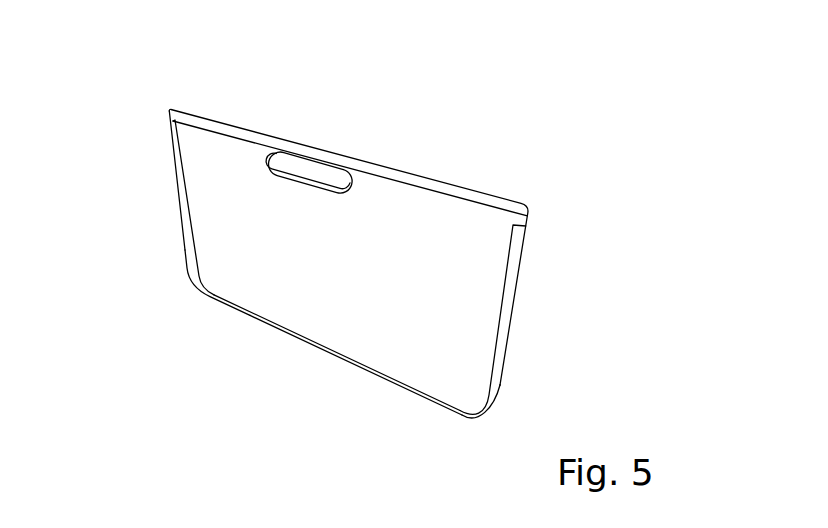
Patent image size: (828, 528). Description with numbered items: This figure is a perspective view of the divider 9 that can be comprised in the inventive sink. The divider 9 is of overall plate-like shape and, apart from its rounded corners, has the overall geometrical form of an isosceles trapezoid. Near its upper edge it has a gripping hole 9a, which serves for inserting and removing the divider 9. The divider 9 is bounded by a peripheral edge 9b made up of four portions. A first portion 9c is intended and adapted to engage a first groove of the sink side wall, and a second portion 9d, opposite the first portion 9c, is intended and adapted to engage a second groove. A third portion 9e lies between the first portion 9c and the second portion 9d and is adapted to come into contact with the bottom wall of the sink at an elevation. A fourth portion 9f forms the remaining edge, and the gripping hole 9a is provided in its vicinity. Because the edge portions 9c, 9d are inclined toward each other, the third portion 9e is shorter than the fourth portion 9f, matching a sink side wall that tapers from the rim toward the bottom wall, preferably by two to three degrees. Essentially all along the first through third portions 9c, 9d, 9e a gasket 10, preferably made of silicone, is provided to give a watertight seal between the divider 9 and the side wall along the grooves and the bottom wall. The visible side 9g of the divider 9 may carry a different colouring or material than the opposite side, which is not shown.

The divider 9 is at (505, 177).
The gripping hole 9a is at (298, 170).
The peripheral edge 9b is at (223, 312).
The first portion 9c is at (523, 228).
The second portion 9d is at (171, 130).
The third portion 9e is at (310, 345).
The fourth portion 9f is at (407, 177).
The side 9g is at (430, 360).
The gasket 10 is at (520, 345).